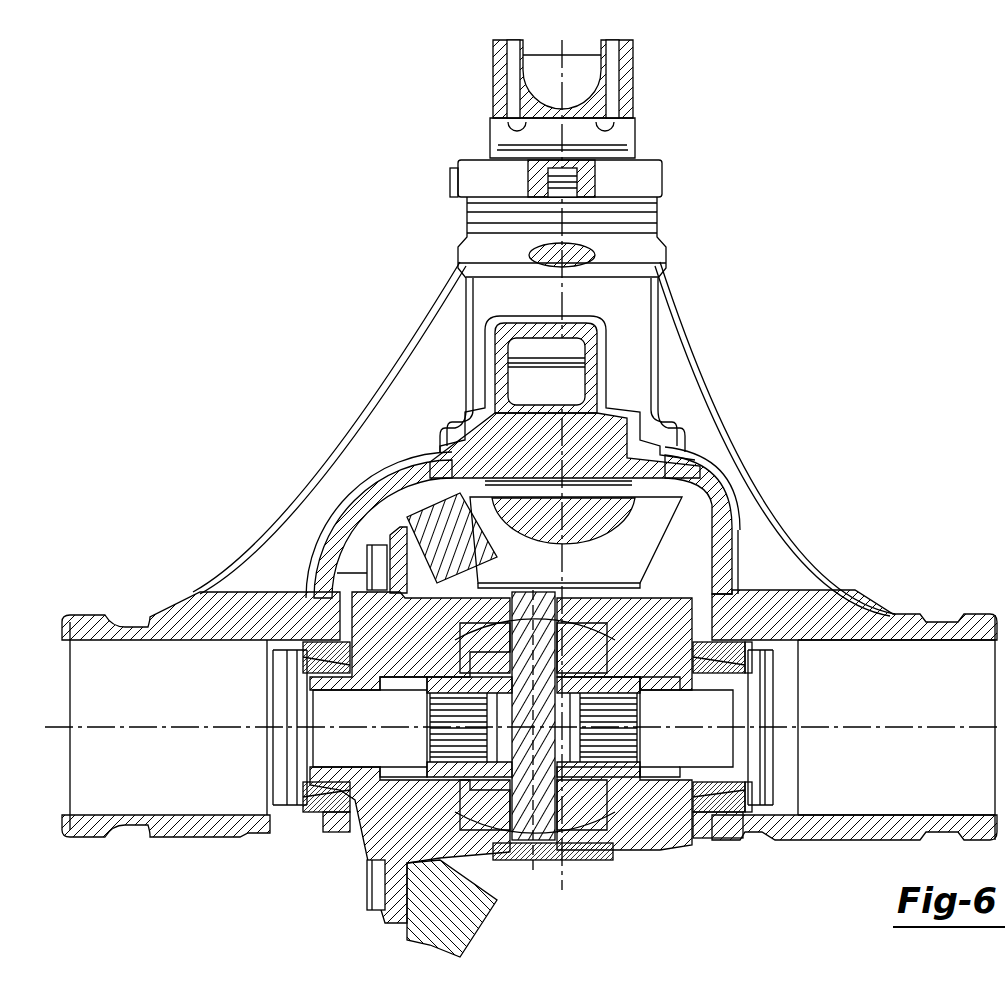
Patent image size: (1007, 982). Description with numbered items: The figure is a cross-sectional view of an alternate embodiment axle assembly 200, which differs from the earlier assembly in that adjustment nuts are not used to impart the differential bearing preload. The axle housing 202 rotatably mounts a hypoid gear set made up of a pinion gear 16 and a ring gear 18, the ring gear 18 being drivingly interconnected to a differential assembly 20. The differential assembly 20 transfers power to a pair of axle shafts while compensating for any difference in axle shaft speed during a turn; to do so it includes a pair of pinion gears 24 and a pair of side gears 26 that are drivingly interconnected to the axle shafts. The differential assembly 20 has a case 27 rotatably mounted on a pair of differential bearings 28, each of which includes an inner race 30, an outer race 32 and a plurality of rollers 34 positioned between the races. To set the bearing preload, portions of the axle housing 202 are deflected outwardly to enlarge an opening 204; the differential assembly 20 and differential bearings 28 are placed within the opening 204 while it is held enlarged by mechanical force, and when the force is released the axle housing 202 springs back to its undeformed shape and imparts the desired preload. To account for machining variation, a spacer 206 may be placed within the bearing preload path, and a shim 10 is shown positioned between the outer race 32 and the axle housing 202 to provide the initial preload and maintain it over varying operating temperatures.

The shim 10 is at (305, 640).
The pinion gear 16 is at (648, 562).
The ring gear 18 is at (477, 930).
The differential assembly 20 is at (488, 770).
The pinion gears 24 is at (587, 643).
The side gears 26 is at (455, 665).
The case 27 is at (383, 846).
The differential bearings 28 is at (315, 638).
The inner race 30 is at (678, 675).
The outer race 32 is at (722, 645).
The rollers 34 is at (700, 648).
The axle assembly 200 is at (811, 397).
The axle housing 202 is at (880, 612).
The opening 204 is at (399, 529).
The spacer 206 is at (762, 590).